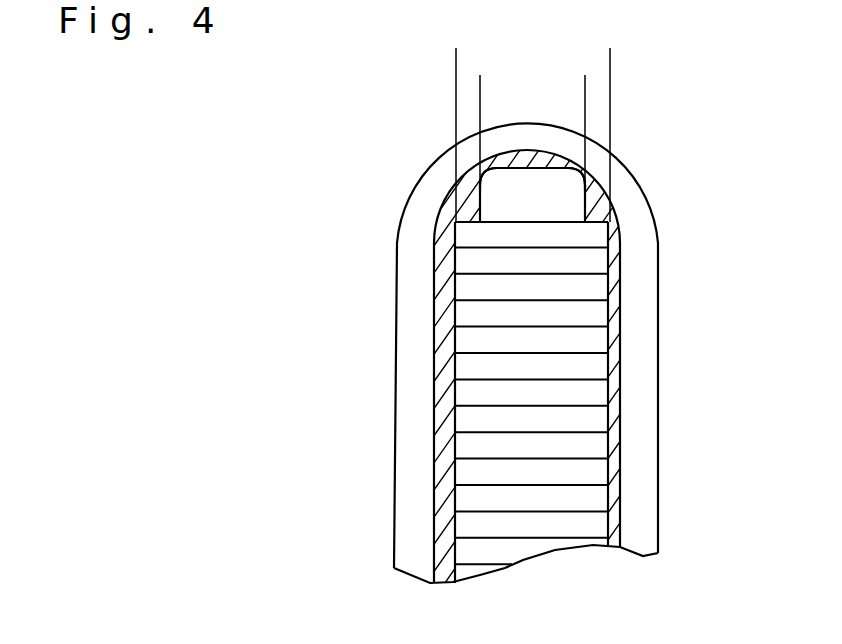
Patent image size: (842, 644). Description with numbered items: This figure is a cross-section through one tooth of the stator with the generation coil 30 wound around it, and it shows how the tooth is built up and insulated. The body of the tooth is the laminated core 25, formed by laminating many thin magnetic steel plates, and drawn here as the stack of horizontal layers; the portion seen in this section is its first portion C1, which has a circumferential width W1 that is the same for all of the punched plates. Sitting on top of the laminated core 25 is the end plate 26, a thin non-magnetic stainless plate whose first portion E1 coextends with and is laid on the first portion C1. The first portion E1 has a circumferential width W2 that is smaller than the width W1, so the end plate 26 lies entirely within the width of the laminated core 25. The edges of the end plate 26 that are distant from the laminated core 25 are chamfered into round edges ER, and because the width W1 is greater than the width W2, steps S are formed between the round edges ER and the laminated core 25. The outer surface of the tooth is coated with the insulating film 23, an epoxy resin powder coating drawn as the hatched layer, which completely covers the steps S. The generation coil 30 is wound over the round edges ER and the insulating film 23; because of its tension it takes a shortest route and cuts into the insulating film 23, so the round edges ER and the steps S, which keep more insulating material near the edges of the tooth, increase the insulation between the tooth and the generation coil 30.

The generation coil 30 is at (635, 458).
The insulating film 23 is at (433, 460).
The end plate 26 is at (522, 192).
The laminated core 25 is at (578, 397).
The first portion of laminated core C1 is at (577, 318).
The first portion of end plate E1 is at (560, 205).
The round edges ER is at (477, 172).
The steps S is at (475, 218).
The circumferential width of first portions of laminated core W1 is at (456, 58).
The circumferential width of first portions of end plates W2 is at (480, 87).